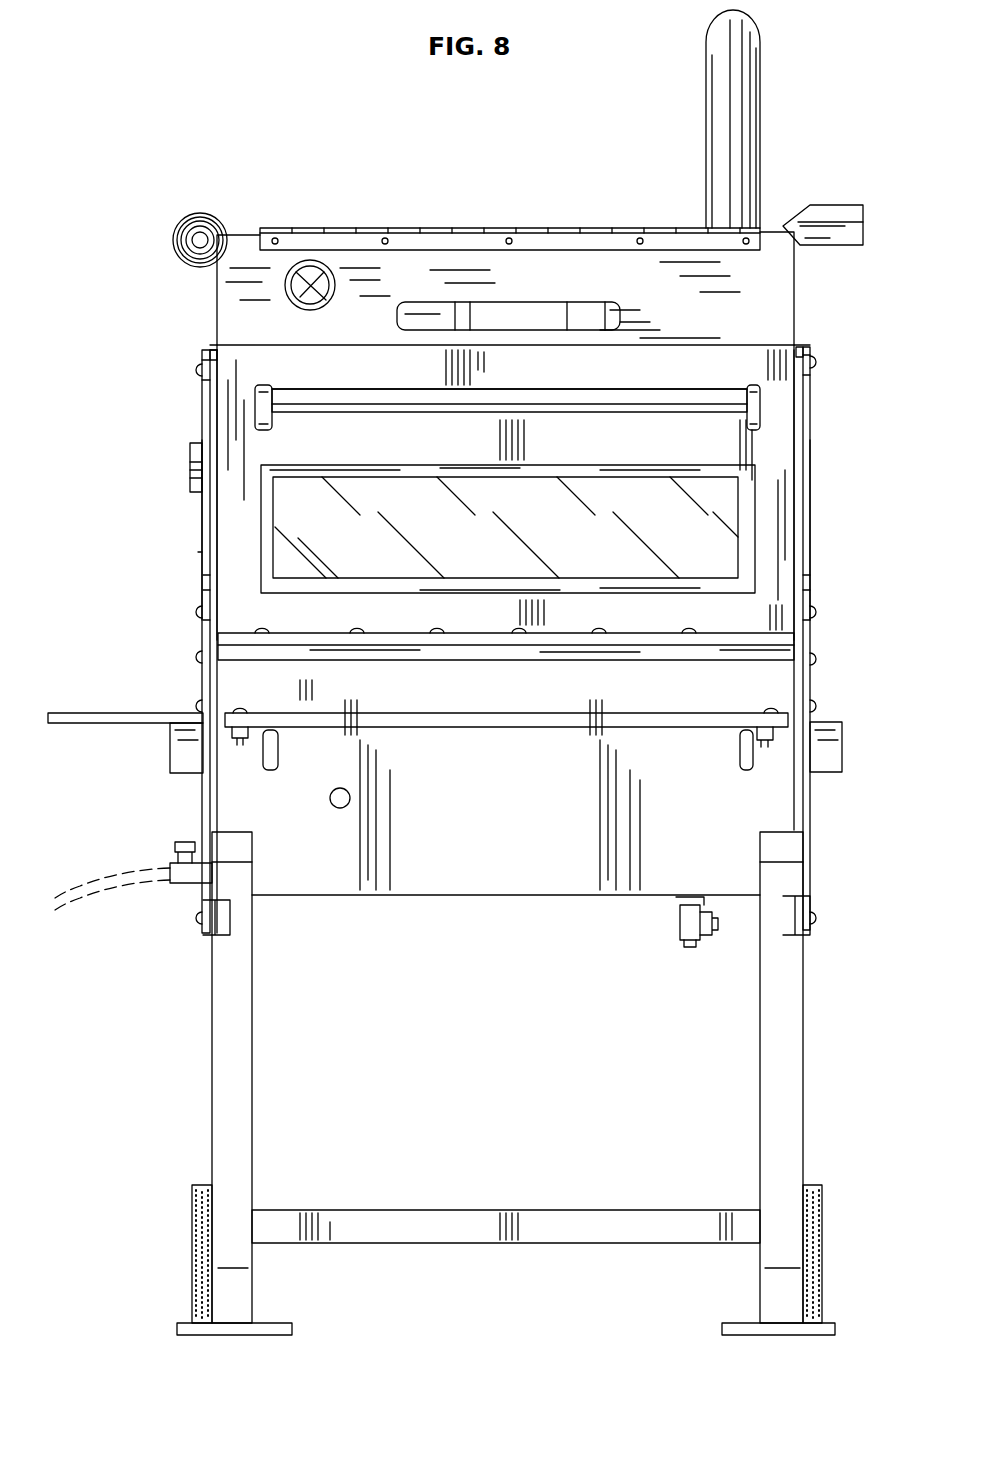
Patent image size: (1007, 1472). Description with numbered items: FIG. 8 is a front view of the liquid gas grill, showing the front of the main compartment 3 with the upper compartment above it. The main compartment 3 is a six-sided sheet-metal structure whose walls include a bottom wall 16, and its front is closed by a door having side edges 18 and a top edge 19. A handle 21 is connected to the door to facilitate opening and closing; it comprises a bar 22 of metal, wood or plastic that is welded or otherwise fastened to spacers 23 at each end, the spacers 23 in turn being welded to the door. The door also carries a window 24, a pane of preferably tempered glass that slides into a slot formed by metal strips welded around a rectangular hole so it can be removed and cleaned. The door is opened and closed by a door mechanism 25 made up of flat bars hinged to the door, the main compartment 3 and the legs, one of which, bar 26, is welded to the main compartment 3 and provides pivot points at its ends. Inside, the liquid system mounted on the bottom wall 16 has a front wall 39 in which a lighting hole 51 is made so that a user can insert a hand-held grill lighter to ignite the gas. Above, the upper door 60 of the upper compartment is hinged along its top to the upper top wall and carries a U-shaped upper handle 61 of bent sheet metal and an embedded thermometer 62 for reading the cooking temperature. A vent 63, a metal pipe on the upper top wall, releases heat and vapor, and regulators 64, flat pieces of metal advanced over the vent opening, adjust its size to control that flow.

The main compartment 3 is at (190, 552).
The bottom wall 16 is at (362, 900).
The side edges 18 is at (220, 506).
The top edge 19 is at (238, 345).
The handle 21 is at (718, 387).
The bar 22 is at (372, 403).
The spacers 23 is at (757, 419).
The window 24 is at (298, 563).
The door mechanism 25 is at (203, 578).
The bar 26 is at (775, 650).
The front wall 39 is at (547, 878).
The lighting hole 51 is at (330, 798).
The upper door 60 is at (773, 296).
The upper handle 61 is at (575, 315).
The thermometer 62 is at (304, 262).
The vent 63 is at (745, 129).
The regulators 64 is at (198, 229).